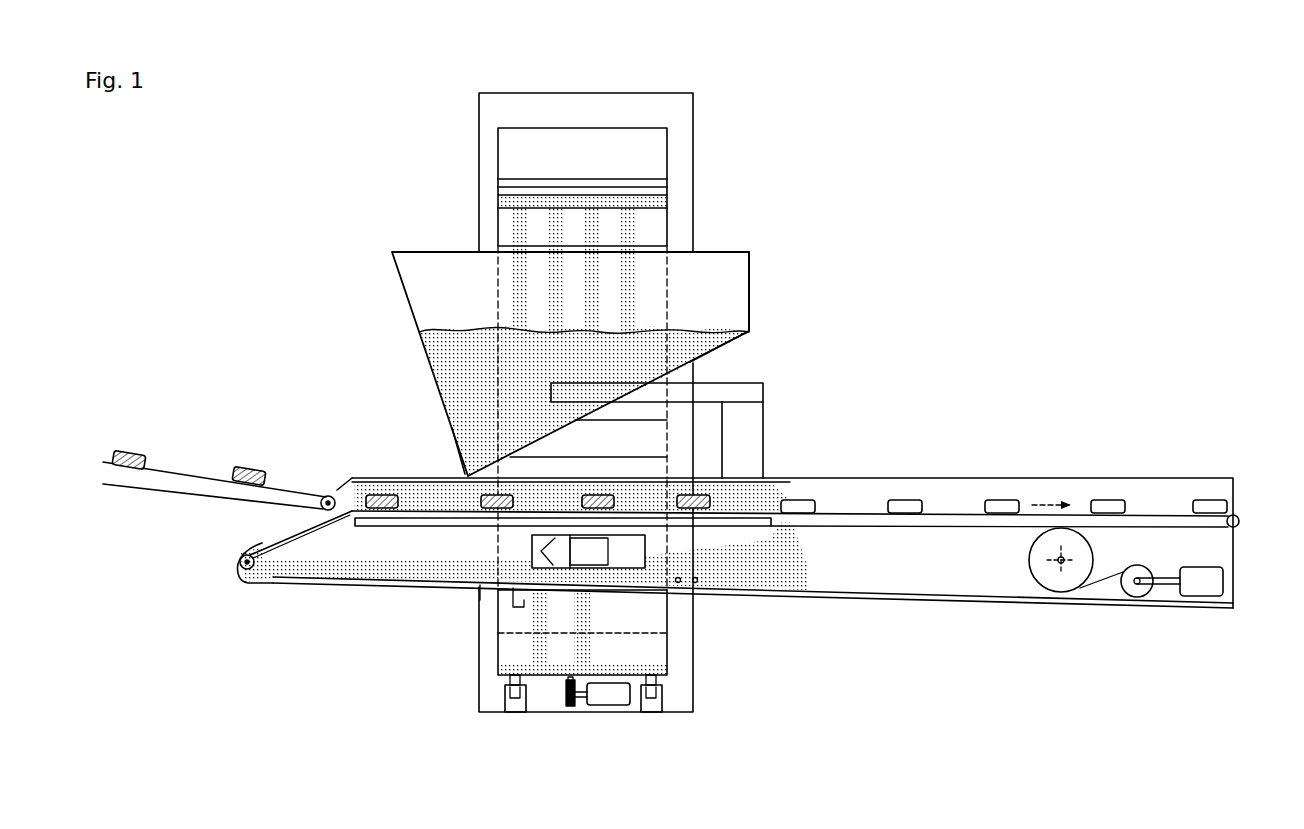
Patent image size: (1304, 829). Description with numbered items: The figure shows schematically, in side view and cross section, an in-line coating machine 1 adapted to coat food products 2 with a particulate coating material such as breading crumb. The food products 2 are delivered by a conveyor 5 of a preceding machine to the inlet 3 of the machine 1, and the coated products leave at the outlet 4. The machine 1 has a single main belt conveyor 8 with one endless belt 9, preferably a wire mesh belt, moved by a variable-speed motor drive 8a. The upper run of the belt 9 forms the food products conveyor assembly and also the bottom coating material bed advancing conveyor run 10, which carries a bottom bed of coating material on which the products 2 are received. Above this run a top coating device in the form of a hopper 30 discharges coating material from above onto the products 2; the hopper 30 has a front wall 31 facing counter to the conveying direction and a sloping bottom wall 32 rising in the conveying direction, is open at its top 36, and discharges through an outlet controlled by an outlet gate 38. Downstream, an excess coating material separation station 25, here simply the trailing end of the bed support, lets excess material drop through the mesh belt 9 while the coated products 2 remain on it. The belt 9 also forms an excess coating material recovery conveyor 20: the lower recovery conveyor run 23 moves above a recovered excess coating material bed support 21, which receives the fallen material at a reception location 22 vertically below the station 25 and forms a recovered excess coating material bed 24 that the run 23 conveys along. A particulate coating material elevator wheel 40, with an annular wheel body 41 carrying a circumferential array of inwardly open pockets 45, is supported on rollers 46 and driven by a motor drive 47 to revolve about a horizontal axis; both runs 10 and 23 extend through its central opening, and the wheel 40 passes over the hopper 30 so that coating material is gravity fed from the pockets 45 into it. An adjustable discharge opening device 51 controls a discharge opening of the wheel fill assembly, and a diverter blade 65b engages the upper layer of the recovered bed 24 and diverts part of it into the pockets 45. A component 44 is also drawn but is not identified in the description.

The in-line coating machine 1 is at (912, 257).
The food products 2 is at (127, 450).
The inlet 3 is at (337, 471).
The outlet 4 is at (1243, 493).
The conveyor 5 is at (183, 472).
The main belt conveyor 8 is at (1183, 538).
The motor drive 8a is at (1198, 583).
The endless belt 9 is at (1125, 532).
The bottom coating material bed advancing conveyor run 10 is at (655, 512).
The excess coating material recovery conveyor 20 is at (913, 587).
The recovered excess coating material bed support 21 is at (875, 599).
The reception location 22 is at (813, 575).
The recovery conveyor run 23 is at (863, 566).
The recovered excess coating material bed 24 is at (740, 572).
The excess coating material separation station 25 is at (779, 490).
The top coating device 30 is at (387, 291).
The front wall 31 is at (419, 327).
The sloping bottom wall 32 is at (722, 350).
The top 36 is at (737, 243).
The outlet gate 38 is at (460, 430).
The particulate coating material elevator wheel 40 is at (712, 130).
The annular wheel body 41 is at (662, 202).
The collecting container 44 is at (522, 622).
The pockets 45 is at (651, 164).
The rollers 46 is at (497, 696).
The motor drive 47 is at (607, 698).
The adjustable discharge opening device 51 is at (513, 600).
The diverter blade 65b is at (600, 549).